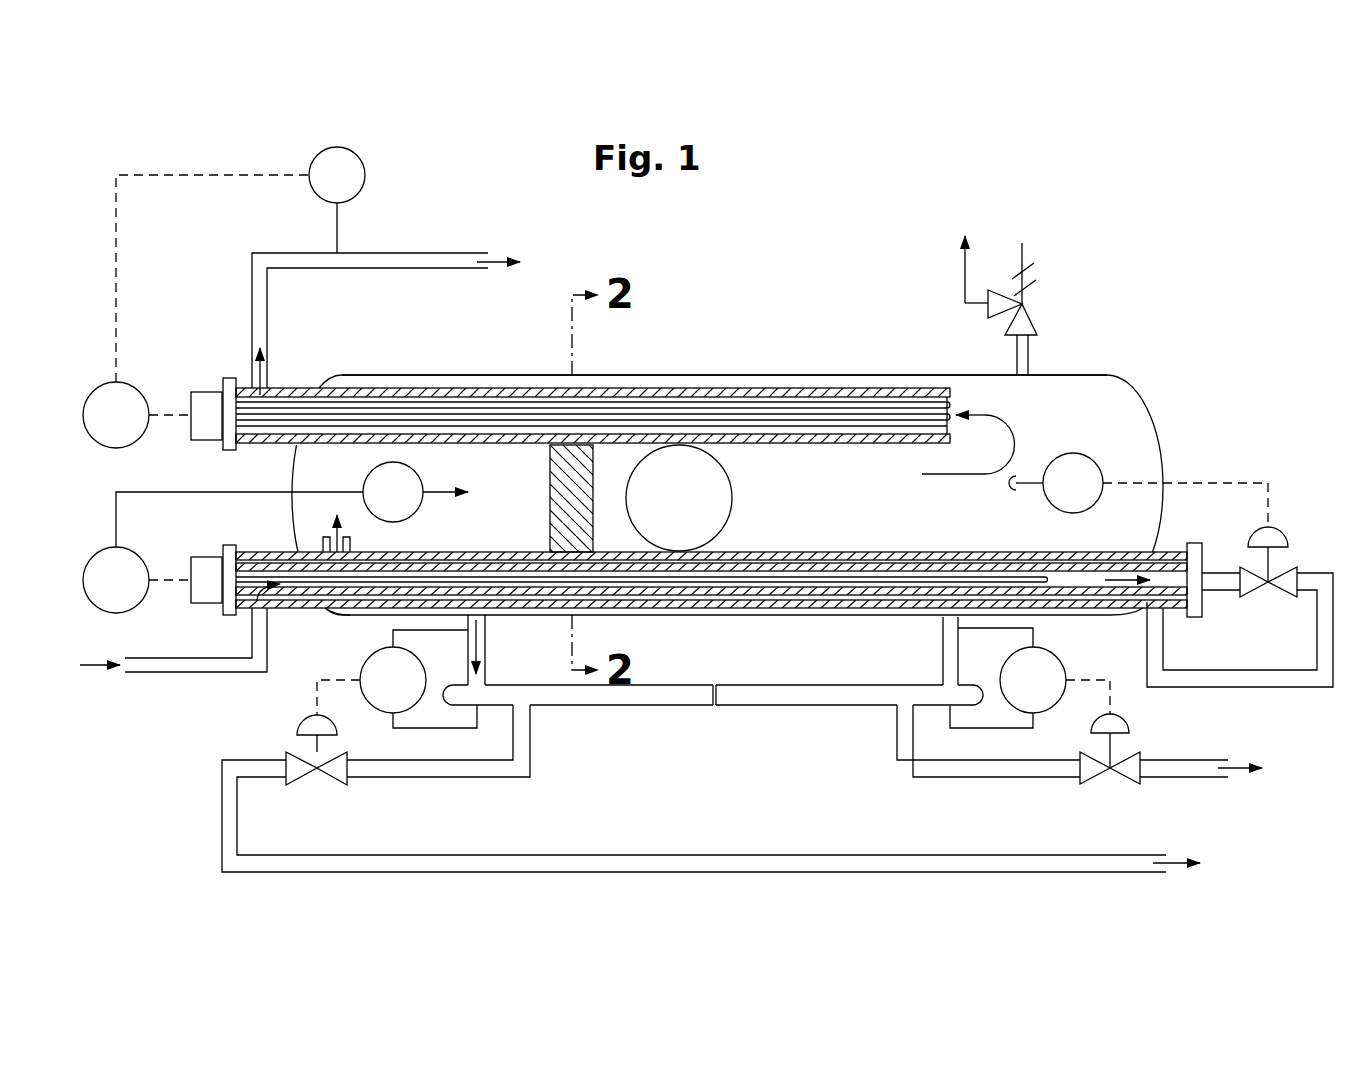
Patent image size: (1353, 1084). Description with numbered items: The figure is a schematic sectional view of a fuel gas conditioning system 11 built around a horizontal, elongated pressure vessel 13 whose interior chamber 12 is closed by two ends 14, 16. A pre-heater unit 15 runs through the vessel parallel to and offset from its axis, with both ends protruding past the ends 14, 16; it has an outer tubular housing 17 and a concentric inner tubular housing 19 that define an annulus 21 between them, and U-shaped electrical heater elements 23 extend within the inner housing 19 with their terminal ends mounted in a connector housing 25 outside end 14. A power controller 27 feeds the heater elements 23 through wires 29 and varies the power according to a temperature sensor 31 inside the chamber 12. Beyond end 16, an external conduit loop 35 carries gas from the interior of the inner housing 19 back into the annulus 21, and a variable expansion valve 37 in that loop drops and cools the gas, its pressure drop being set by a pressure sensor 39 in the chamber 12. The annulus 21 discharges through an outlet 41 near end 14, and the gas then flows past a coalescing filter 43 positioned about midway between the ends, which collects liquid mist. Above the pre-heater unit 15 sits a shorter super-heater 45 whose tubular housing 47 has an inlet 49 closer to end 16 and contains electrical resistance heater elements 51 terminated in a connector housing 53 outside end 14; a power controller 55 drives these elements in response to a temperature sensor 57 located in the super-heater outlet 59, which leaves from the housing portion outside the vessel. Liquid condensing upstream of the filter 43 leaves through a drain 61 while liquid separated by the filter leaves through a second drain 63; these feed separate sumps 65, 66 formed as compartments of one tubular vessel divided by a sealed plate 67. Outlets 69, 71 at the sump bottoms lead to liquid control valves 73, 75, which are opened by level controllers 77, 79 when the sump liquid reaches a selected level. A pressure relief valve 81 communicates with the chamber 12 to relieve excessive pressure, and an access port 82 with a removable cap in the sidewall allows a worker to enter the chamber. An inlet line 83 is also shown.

The fuel gas conditioning system 11 is at (834, 246).
The interior chamber 12 is at (875, 517).
The pressure vessel 13 is at (747, 375).
The closed end 14 is at (292, 473).
The pre-heater unit 15 is at (472, 548).
The closed end 16 is at (1160, 462).
The outer tubular housing 17 is at (880, 552).
The inner tubular housing 19 is at (327, 610).
The annulus 21 is at (622, 598).
The electrical heater elements 23 is at (1062, 573).
The connector housing 25 is at (208, 568).
The power controller 27 is at (116, 613).
The wires 29 is at (162, 575).
The temperature sensor 31 is at (366, 474).
The external conduit loop 35 is at (1230, 690).
The variable expansion valve 37 is at (1250, 596).
The pressure sensor 39 is at (1093, 458).
The outlet 41 is at (353, 546).
The coalescing filter 43 is at (550, 471).
The super-heater 45 is at (456, 385).
The tubular housing 47 is at (750, 444).
The inlet 49 is at (952, 403).
The electrical resistance heater elements 51 is at (858, 415).
The connector housing 53 is at (208, 398).
The power controller 55 is at (116, 450).
The temperature sensor 57 is at (316, 154).
The outlet 59 is at (445, 258).
The drain 61 is at (486, 648).
The second drain 63 is at (943, 645).
The sump 65 is at (663, 688).
The sump 66 is at (765, 688).
The sealed plate 67 is at (713, 696).
The outlet 69 is at (531, 748).
The outlet 71 is at (897, 745).
The liquid control valve 73 is at (328, 776).
The liquid control valve 75 is at (1096, 782).
The level controller 77 is at (361, 667).
The level controller 79 is at (1060, 657).
The pressure relief valve 81 is at (1036, 321).
The access port 82 is at (730, 517).
The inlet pipe 83 is at (225, 675).